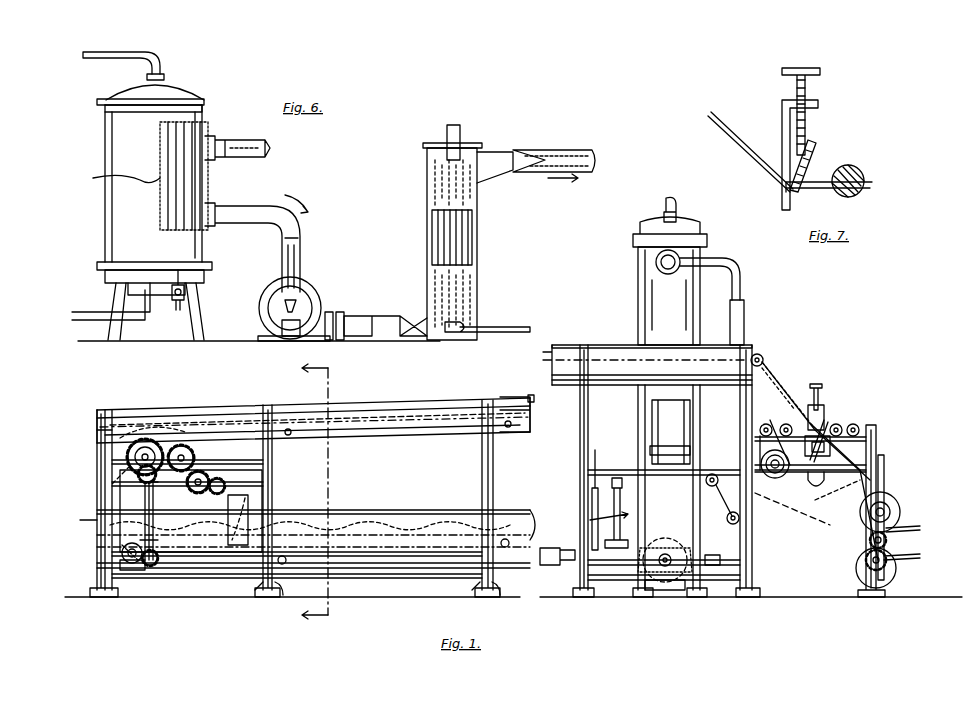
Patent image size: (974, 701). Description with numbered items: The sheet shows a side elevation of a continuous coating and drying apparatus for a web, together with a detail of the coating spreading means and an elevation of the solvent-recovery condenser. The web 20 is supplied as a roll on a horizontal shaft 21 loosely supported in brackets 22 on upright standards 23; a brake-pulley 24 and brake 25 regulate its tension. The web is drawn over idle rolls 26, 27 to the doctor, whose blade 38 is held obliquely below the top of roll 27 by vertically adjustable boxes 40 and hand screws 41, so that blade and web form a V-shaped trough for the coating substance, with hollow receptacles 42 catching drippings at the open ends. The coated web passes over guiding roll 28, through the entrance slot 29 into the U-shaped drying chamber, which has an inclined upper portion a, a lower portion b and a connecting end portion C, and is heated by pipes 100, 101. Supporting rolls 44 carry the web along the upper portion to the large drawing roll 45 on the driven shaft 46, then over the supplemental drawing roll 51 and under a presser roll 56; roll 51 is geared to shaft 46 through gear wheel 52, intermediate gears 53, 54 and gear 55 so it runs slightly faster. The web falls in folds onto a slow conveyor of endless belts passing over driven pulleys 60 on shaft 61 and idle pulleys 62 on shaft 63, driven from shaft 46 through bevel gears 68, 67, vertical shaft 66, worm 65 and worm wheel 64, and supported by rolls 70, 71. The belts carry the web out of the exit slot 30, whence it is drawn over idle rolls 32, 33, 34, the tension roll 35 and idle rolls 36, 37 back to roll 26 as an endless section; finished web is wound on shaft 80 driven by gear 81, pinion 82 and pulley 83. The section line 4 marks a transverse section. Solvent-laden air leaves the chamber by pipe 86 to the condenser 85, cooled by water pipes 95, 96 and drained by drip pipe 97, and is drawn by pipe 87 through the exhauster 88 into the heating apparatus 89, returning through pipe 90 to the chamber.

In FIG. 7, the web 20 is at (744, 138).
In FIG. 1, the web 20 is at (345, 423).
In FIG. 1, the horizontal shaft 21 is at (896, 511).
In FIG. 1, the brackets 22 is at (888, 491).
In FIG. 1, the upright standards 23 is at (875, 443).
In FIG. 1, the brake-pulley 24 is at (892, 507).
In FIG. 1, the brake 25 is at (878, 499).
In FIG. 1, the idle roll 26 is at (856, 420).
In FIG. 7, the idle roll 27 is at (864, 178).
In FIG. 1, the idle roll 27 is at (838, 420).
In FIG. 1, the idle guiding and supporting roll 28 is at (764, 361).
In FIG. 1, the entrance slot 29 is at (757, 352).
In FIG. 6, the exit slot 30 is at (563, 150).
In FIG. 1, the exit slot 30 is at (598, 531).
In FIG. 1, the idle roll 32 is at (711, 484).
In FIG. 1, the idle roll 33 is at (729, 519).
In FIG. 1, the idle roll 34 is at (766, 420).
In FIG. 1, the tension roll 35 is at (778, 480).
In FIG. 1, the idle roll 36 is at (786, 420).
In FIG. 1, the idle roll 37 is at (818, 487).
In FIG. 7, the blade 38 is at (814, 142).
In FIG. 1, the blade 38 is at (829, 409).
In FIG. 7, the boxes 40 is at (812, 168).
In FIG. 1, the boxes 40 is at (812, 425).
In FIG. 7, the hand screws 41 is at (808, 97).
In FIG. 1, the hand screws 41 is at (818, 387).
In FIG. 1, the hollow receptacles 42 is at (826, 451).
In FIG. 1, the supporting rolls 44 is at (289, 439).
In FIG. 1, the drawing roll 45 is at (139, 434).
In FIG. 1, the horizontal shaft 46 is at (128, 449).
In FIG. 1, the roll 51 is at (250, 491).
In FIG. 1, the gear wheel 52 is at (219, 477).
In FIG. 1, the intermediate gear wheel 53 is at (199, 473).
In FIG. 1, the intermediate gear wheel 54 is at (184, 450).
In FIG. 1, the gear wheel 55 is at (182, 448).
In FIG. 1, the presser roll 56 is at (219, 478).
In FIG. 1, the driven pulleys 60 is at (118, 542).
In FIG. 1, the horizontal shaft 61 is at (130, 544).
In FIG. 1, the idle pulleys 62 is at (667, 545).
In FIG. 1, the horizontal shaft 63 is at (667, 580).
In FIG. 1, the worm wheel 64 is at (118, 559).
In FIG. 1, the worm 65 is at (152, 567).
In FIG. 1, the vertical shaft 66 is at (155, 529).
In FIG. 1, the bevel gear 67 is at (130, 475).
In FIG. 1, the bevel gear 68 is at (150, 466).
In FIG. 1, the rolls 70 is at (506, 540).
In FIG. 1, the rolls 71 is at (503, 595).
In FIG. 1, the winding shaft 80 is at (870, 569).
In FIG. 1, the gear wheel 81 is at (868, 557).
In FIG. 1, the pinion 82 is at (892, 545).
In FIG. 1, the driving pulley 83 is at (890, 536).
In FIG. 6, the condenser 85 is at (115, 196).
In FIG. 1, the condenser 85 is at (638, 288).
In FIG. 6, the pipe 86 is at (237, 140).
In FIG. 1, the pipe 86 is at (744, 291).
In FIG. 6, the pipe 87 is at (244, 206).
In FIG. 6, the exhauster 88 is at (303, 300).
In FIG. 6, the heating apparatus 89 is at (470, 257).
In FIG. 1, the heating apparatus 89 is at (671, 490).
In FIG. 1, the pipe 90 is at (606, 477).
In FIG. 6, the cold water pipe 95 is at (162, 62).
In FIG. 1, the cold water pipe 95 is at (675, 204).
In FIG. 6, the cold water pipe 96 is at (82, 312).
In FIG. 6, the drip pipe 97 is at (188, 294).
In FIG. 1, the heating pipes 100 is at (530, 394).
In FIG. 1, the heating pipes 101 is at (466, 555).
In FIG. 1, the section line 4 is at (322, 495).
In FIG. 1, the upper elongated portion a is at (410, 408).
In FIG. 1, the lower elongated portion b is at (385, 538).
In FIG. 1, the end portion C is at (120, 507).